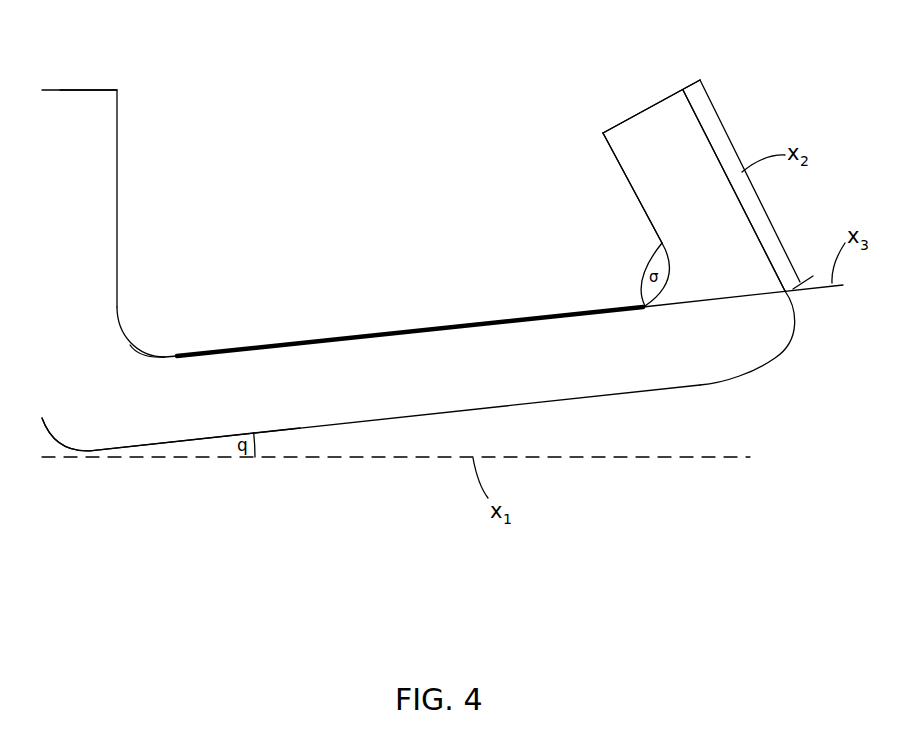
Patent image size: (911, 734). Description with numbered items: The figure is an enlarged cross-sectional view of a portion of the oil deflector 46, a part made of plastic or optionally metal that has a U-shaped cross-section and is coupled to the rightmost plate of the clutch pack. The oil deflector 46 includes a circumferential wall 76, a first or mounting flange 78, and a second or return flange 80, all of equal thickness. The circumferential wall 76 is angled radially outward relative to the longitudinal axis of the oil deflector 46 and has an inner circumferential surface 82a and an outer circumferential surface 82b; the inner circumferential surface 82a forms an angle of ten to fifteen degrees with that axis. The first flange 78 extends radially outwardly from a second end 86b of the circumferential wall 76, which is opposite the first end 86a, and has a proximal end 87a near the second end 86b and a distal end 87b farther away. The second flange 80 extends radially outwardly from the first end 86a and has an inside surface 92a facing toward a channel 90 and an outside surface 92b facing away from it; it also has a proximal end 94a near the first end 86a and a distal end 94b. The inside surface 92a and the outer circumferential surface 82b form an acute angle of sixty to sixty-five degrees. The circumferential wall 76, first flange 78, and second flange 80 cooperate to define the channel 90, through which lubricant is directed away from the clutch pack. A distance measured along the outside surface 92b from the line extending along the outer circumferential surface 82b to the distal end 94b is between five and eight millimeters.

The oil deflector 46 is at (262, 50).
The circumferential wall 76 is at (197, 438).
The first flange 78 is at (112, 126).
The second flange 80 is at (612, 127).
The inner circumferential surface 82a is at (650, 392).
The outer circumferential surface 82b is at (227, 348).
The first end 86a is at (733, 328).
The second end 86b is at (133, 392).
The proximal end 87a is at (105, 323).
The distal end 87b is at (70, 90).
The channel 90 is at (286, 184).
The inside surface 92a is at (613, 153).
The outside surface 92b is at (703, 130).
The proximal end 94a is at (710, 252).
The distal end 94b is at (647, 108).